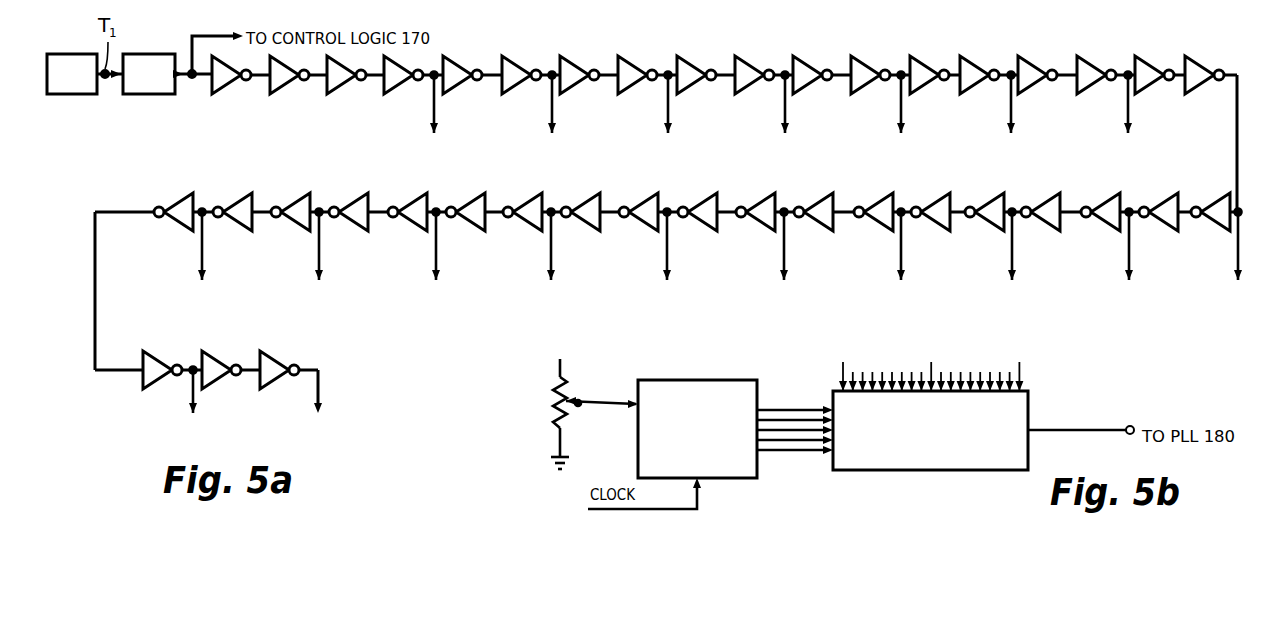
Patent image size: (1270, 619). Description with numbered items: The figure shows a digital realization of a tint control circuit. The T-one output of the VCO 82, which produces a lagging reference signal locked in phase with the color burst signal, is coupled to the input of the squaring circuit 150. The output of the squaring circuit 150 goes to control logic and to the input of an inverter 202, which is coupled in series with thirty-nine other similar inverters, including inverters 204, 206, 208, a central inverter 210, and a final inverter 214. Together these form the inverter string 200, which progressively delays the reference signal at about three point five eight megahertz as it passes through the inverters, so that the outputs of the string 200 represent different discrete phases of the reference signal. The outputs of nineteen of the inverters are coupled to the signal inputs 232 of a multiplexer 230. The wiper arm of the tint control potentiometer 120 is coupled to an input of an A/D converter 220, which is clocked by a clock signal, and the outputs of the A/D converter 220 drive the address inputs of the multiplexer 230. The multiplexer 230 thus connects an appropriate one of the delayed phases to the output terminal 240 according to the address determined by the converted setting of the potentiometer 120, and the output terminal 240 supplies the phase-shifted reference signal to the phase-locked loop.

In FIG. 5A, the VCO 82 is at (78, 53).
In FIG. 5A, the squaring circuit 150 is at (150, 53).
In FIG. 5A, the inverter string 200 is at (716, 88).
In FIG. 5A, the inverter 202 is at (224, 95).
In FIG. 5A, the inverter 204 is at (280, 95).
In FIG. 5A, the inverter 206 is at (335, 95).
In FIG. 5A, the inverter 208 is at (397, 95).
In FIG. 5A, the central inverter 210 is at (1047, 227).
In FIG. 5A, the final inverter 214 is at (269, 390).
In FIG. 5B, the tint control potentiometer 120 is at (552, 394).
In FIG. 5B, the A/D converter 220 is at (706, 380).
In FIG. 5B, the multiplexer 230 is at (902, 471).
In FIG. 5B, the signal inputs 232 is at (1030, 375).
In FIG. 5B, the output terminal 240 is at (1129, 426).